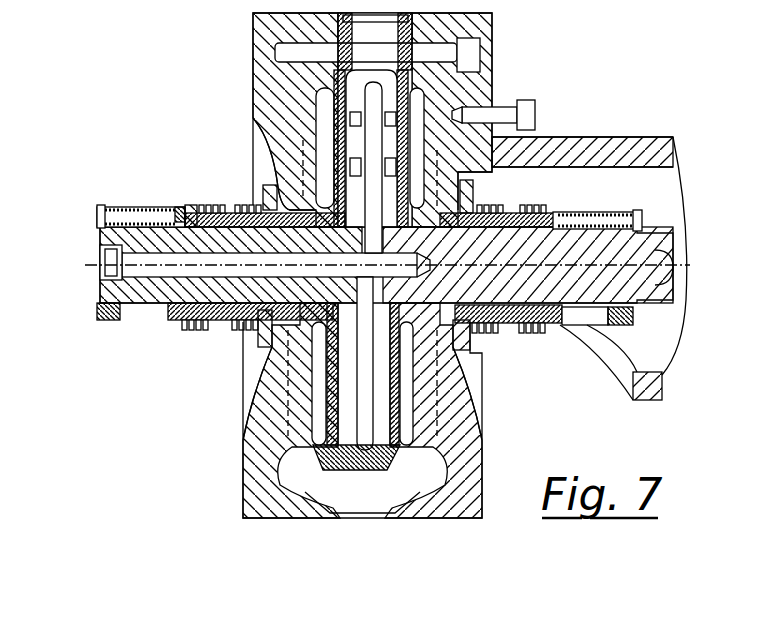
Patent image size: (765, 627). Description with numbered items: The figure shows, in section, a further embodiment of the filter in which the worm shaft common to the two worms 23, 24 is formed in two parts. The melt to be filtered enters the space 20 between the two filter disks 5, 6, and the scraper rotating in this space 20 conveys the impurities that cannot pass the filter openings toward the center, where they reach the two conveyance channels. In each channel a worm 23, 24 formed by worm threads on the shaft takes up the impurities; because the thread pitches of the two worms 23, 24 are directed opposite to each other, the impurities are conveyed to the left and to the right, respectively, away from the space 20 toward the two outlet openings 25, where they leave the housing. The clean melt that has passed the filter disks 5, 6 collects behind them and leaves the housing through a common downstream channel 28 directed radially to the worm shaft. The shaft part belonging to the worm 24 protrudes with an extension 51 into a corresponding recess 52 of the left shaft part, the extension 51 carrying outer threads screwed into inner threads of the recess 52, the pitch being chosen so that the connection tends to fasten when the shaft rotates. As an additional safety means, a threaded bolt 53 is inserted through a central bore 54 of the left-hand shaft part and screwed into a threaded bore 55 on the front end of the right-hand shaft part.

The filter disk 5 is at (350, 104).
The filter disk 6 is at (490, 70).
The space 20 is at (335, 144).
The worm 23 is at (207, 208).
The worm 24 is at (512, 213).
The outlet opening 25 is at (587, 317).
The downstream channel 28 is at (352, 513).
The extension 51 is at (503, 328).
The recess 52 is at (253, 320).
The threaded bolt 53 is at (100, 295).
The central bore 54 is at (140, 207).
The threaded bore 55 is at (383, 278).